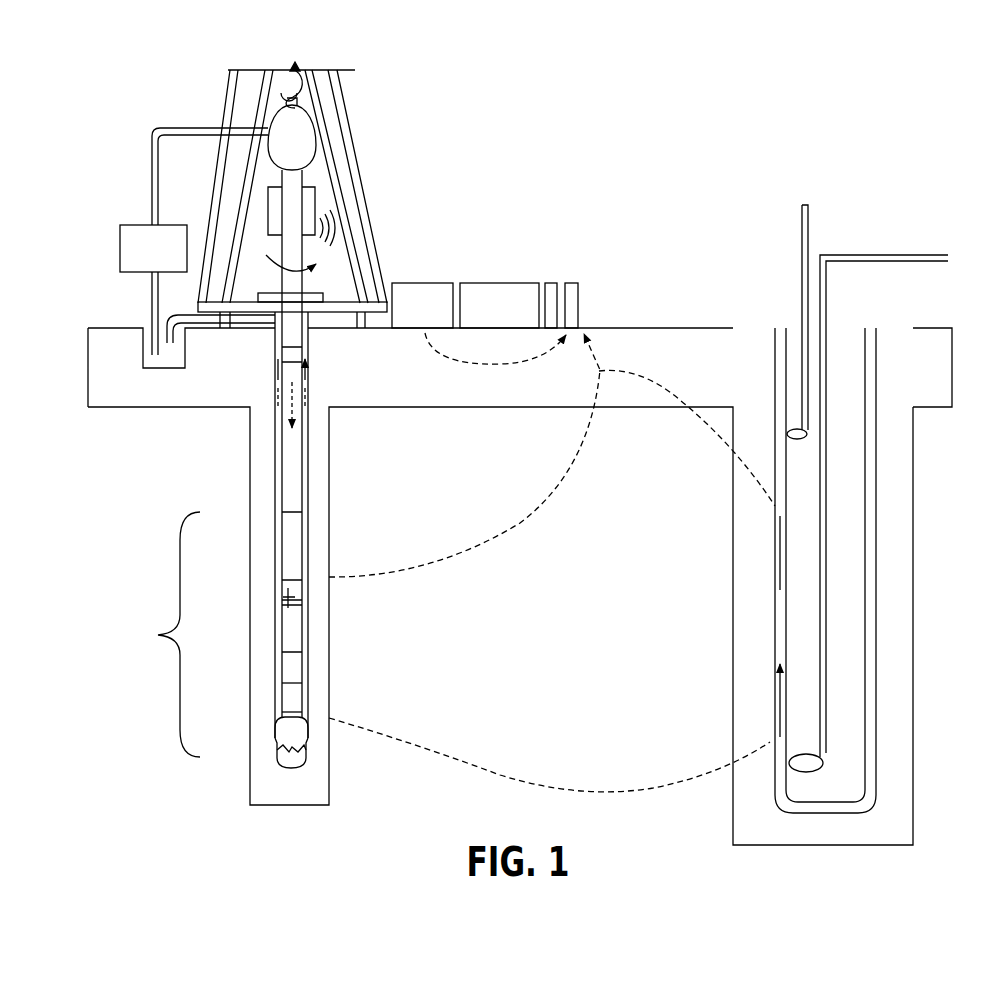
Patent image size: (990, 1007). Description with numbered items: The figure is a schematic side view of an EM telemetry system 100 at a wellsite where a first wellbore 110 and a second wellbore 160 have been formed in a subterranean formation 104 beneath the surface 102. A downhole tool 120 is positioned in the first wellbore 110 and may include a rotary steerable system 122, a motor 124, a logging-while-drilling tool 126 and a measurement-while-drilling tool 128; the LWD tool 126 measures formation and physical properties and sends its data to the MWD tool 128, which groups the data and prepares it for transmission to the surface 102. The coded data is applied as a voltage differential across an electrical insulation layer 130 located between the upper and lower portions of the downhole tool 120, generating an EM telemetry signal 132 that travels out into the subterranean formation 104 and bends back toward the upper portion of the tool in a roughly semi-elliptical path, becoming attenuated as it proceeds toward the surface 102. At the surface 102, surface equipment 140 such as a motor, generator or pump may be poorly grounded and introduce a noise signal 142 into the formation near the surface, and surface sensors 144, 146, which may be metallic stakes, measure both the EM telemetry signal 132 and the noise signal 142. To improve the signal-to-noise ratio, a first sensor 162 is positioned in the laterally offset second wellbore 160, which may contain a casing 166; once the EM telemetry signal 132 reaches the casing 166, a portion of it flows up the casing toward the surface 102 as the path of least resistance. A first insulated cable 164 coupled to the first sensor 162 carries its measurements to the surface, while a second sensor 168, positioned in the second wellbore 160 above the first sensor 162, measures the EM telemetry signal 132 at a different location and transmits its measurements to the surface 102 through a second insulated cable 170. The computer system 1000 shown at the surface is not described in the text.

The EM telemetry system 100 is at (126, 140).
The surface 102 is at (584, 327).
The subterranean formation 104 is at (462, 390).
The first wellbore 110 is at (306, 322).
The downhole tool 120 is at (158, 634).
The rotary steerable system 122 is at (283, 698).
The motor 124 is at (283, 670).
The logging-while-drilling tool 126 is at (283, 623).
The measurement-while-drilling tool 128 is at (283, 607).
The electrical insulation layer 130 is at (289, 610).
The EM telemetry signal 132 is at (550, 514).
The surface equipment 140 is at (416, 283).
The noise signal 142 is at (498, 366).
The surface sensor 144 is at (568, 283).
The surface sensor 146 is at (550, 283).
The second wellbore 160 is at (856, 314).
The first sensor 162 is at (829, 773).
The first insulated cable 164 is at (834, 717).
The casing 166 is at (877, 557).
The second sensor 168 is at (778, 434).
The second insulated cable 170 is at (803, 378).
The computer system 1000 is at (490, 283).